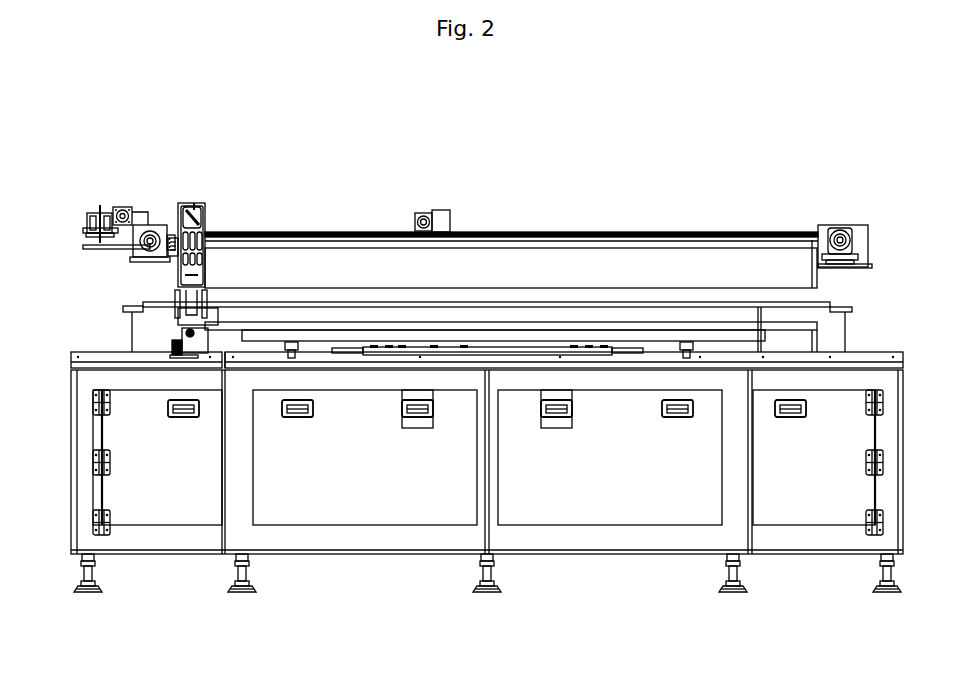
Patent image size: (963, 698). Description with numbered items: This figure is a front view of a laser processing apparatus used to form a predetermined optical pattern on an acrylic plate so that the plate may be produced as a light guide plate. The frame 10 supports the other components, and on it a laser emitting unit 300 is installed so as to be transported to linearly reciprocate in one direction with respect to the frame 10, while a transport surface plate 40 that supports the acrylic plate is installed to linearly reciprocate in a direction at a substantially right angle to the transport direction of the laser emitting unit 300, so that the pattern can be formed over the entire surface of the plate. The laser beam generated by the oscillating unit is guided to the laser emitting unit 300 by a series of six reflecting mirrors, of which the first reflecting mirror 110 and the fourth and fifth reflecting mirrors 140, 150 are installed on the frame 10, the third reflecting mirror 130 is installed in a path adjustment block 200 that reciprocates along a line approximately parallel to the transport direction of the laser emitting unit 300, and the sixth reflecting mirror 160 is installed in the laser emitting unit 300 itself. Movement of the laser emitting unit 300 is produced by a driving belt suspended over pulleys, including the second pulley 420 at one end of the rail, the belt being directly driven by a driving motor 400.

The frame 10 is at (392, 252).
The transport surface plate 40 is at (644, 332).
The first reflecting mirror 110 is at (117, 208).
The third reflecting mirror 130 is at (423, 213).
The fourth reflecting mirror 140 is at (122, 216).
The fifth reflecting mirror 150 is at (86, 191).
The sixth reflecting mirror 160 is at (174, 203).
The path adjustment block 200 is at (450, 214).
The laser emitting unit 300 is at (216, 188).
The driving motor 400 is at (830, 225).
The second pulley 420 is at (137, 258).